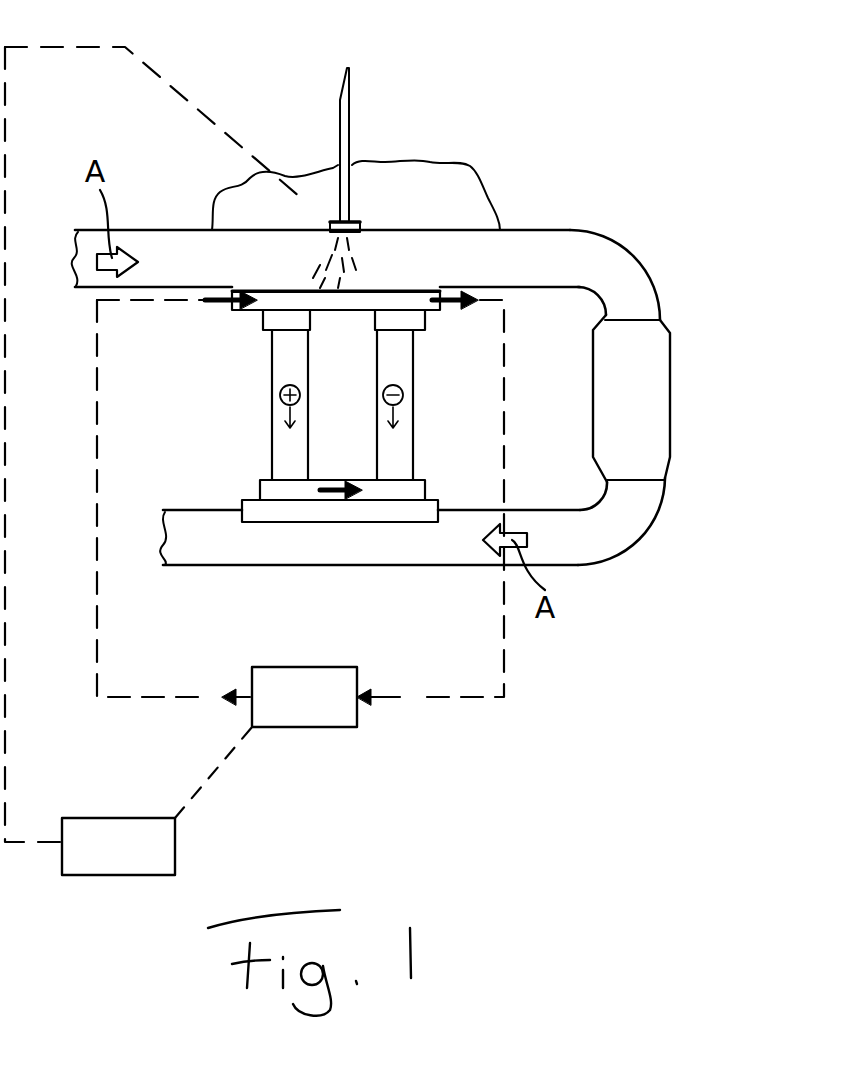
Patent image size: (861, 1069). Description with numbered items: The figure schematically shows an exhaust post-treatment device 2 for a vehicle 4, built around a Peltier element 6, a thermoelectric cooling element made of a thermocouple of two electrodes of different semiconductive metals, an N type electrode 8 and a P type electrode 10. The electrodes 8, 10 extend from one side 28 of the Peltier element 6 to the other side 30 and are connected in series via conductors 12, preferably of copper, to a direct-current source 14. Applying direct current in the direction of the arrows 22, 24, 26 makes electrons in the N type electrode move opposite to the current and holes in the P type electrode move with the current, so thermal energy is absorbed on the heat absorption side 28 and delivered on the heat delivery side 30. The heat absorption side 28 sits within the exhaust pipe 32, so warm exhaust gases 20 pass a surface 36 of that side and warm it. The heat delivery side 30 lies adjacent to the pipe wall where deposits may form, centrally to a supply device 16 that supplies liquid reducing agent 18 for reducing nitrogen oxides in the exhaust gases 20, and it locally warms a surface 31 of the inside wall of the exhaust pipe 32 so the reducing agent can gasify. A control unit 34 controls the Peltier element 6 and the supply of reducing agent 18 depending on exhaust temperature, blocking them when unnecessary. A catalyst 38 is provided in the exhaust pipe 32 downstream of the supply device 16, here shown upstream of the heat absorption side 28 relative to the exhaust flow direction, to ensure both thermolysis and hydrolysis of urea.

The exhaust post-treatment device 2 is at (568, 132).
The vehicle 4 is at (472, 208).
The Peltier element 6 is at (310, 458).
The N type electrode 8 is at (397, 370).
The P type electrode 10 is at (278, 368).
The conductors 12 is at (262, 485).
The direct-current source 14 is at (302, 705).
The supply device 16 is at (360, 224).
The liquid reducing agent 18 is at (342, 200).
The exhaust gases 20 is at (478, 277).
The arrow indicating current direction 22 is at (230, 305).
The arrow indicating current direction 24 is at (345, 500).
The arrow indicating current direction 26 is at (458, 302).
The heat absorption side 28 is at (290, 506).
The heat delivery side 30 is at (333, 297).
The surface 31 is at (366, 286).
The exhaust pipe 32 is at (596, 230).
The control unit 34 is at (120, 848).
The surface of heat absorption side 36 is at (415, 522).
The catalyst 38 is at (660, 440).